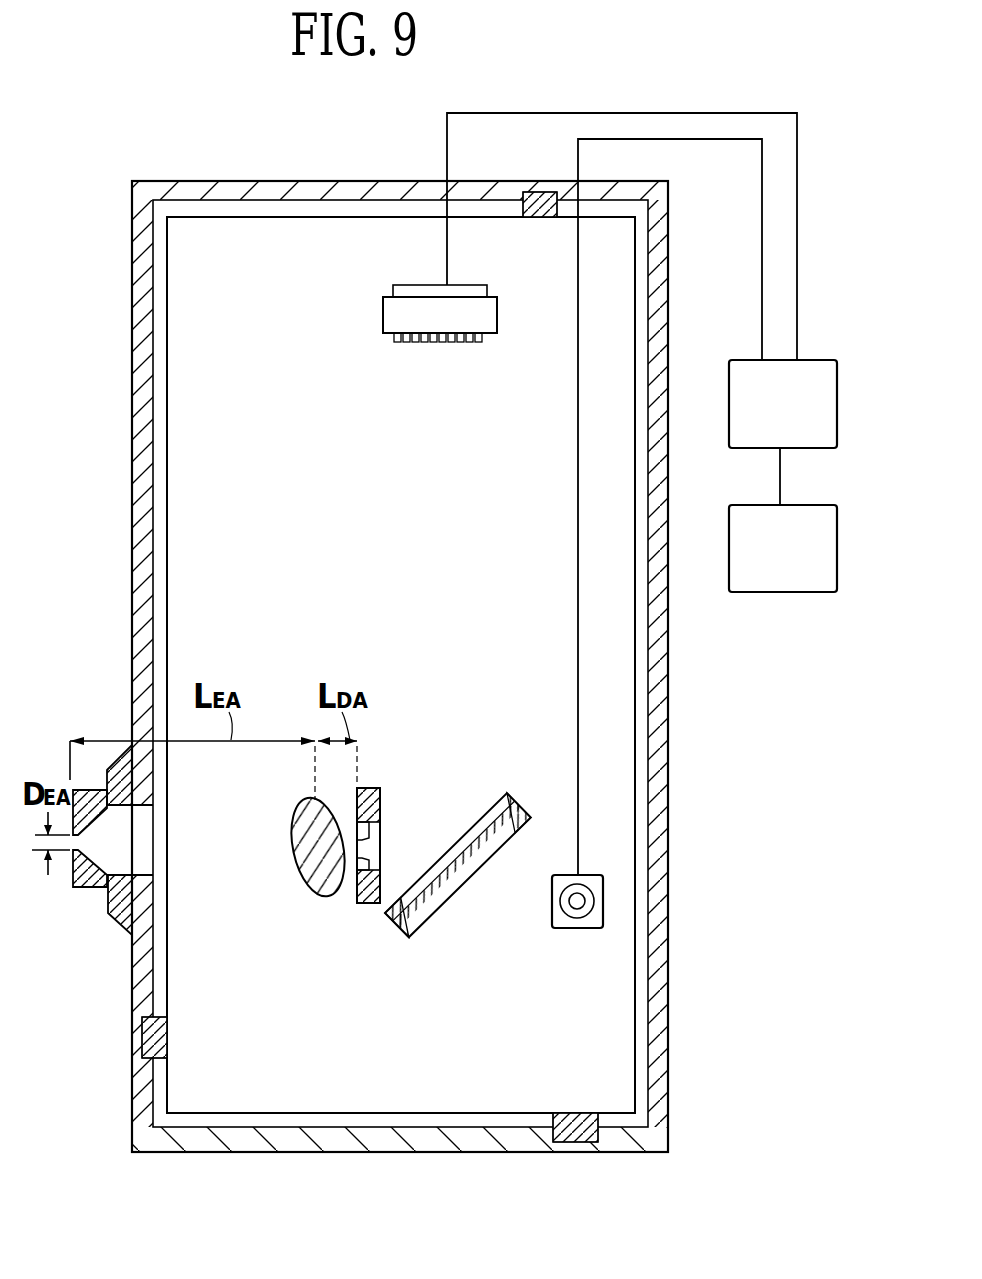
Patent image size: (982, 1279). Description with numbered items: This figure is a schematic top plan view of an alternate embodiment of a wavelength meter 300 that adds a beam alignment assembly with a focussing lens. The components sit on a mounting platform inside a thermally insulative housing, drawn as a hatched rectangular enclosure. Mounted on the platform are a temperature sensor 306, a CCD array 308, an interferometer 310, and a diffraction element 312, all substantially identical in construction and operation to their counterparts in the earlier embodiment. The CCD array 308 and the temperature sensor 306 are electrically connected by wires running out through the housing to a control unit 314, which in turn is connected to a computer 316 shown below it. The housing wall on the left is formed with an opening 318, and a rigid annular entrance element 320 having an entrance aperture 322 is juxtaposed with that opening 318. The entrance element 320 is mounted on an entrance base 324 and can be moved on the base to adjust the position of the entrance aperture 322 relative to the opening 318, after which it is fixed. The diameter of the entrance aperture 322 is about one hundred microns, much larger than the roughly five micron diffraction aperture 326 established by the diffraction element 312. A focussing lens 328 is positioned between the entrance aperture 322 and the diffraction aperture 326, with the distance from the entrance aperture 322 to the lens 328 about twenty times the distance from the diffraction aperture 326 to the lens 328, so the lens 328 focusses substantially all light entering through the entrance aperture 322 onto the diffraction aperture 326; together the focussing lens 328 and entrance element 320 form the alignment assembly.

The wavelength meter 300 is at (715, 680).
The temperature sensor 306 is at (657, 533).
The CCD array 308 is at (383, 308).
The interferometer 310 is at (531, 779).
The diffraction element 312 is at (382, 790).
The control unit 314 is at (810, 358).
The computer 316 is at (820, 503).
The opening 318 is at (144, 855).
The entrance element 320 is at (73, 887).
The entrance aperture 322 is at (80, 835).
The entrance base 324 is at (114, 918).
The diffraction aperture 326 is at (356, 846).
The focussing lens 328 is at (303, 886).